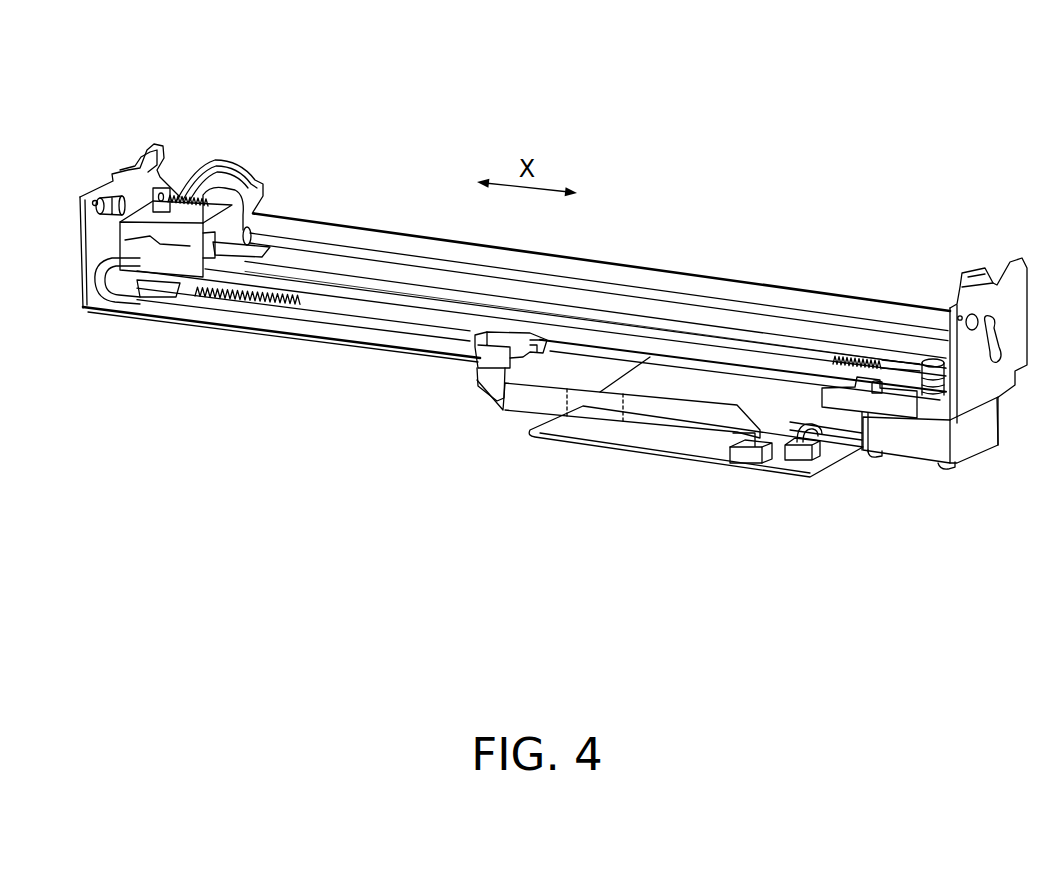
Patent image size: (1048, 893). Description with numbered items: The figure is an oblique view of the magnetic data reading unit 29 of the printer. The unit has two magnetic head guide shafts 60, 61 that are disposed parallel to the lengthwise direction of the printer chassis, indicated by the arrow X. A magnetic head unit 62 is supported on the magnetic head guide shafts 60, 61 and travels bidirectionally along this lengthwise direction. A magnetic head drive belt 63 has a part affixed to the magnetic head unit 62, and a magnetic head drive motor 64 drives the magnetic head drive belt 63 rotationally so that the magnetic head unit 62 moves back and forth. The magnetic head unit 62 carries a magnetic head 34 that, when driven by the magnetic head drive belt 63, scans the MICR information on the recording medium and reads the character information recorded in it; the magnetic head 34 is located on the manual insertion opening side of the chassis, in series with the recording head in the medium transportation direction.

The magnetic data reading unit 29 is at (553, 293).
The magnetic head 34 is at (233, 162).
The magnetic head guide shaft 60 is at (634, 266).
The magnetic head guide shaft 61 is at (747, 311).
The magnetic head unit 62 is at (180, 250).
The magnetic head drive belt 63 is at (813, 352).
The magnetic head drive motor 64 is at (915, 463).